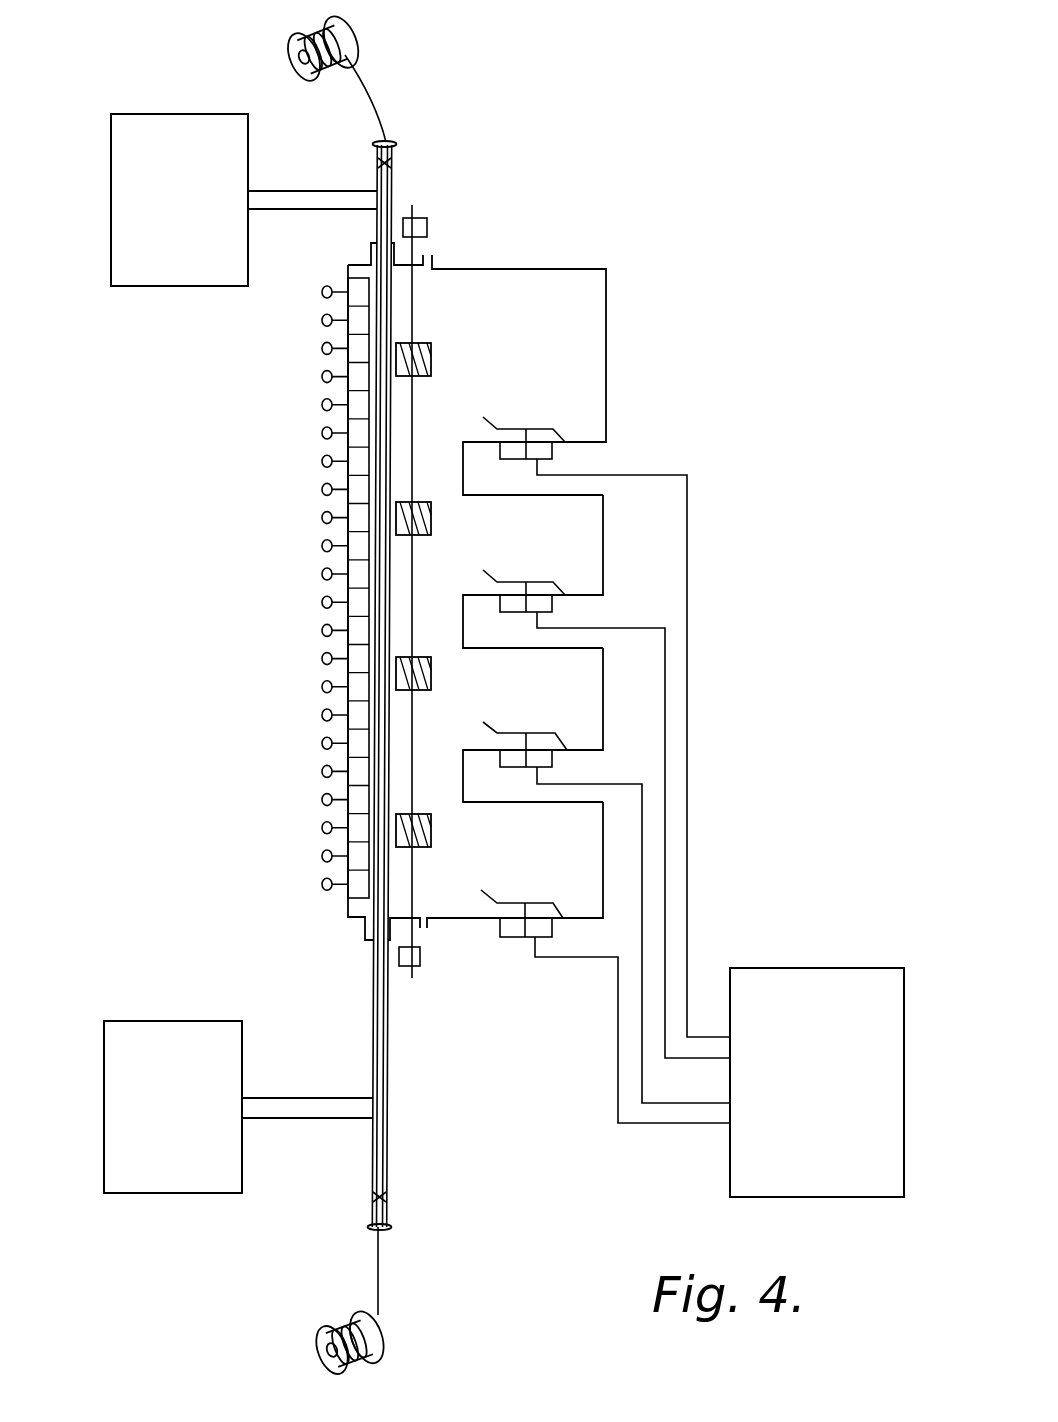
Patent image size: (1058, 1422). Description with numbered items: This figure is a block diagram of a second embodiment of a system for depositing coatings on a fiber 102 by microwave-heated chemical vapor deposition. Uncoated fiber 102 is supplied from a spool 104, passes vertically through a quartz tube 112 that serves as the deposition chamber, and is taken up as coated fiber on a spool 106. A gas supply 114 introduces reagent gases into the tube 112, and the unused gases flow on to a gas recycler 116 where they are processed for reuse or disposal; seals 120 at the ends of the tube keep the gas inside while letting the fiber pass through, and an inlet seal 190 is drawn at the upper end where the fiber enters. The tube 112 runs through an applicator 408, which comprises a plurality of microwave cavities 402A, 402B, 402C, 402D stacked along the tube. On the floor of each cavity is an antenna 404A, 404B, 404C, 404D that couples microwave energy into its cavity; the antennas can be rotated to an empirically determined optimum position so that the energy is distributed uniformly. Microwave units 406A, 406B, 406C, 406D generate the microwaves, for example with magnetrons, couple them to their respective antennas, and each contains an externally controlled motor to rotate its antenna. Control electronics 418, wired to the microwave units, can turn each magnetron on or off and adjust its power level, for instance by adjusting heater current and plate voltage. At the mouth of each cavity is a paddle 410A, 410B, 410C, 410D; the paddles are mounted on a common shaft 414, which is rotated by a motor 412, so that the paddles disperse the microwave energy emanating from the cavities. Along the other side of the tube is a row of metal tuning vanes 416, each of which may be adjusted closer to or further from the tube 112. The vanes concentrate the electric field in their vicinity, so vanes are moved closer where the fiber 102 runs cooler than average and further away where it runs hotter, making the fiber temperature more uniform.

The fiber 102 is at (370, 88).
The spool 104 is at (345, 24).
The spool 106 is at (386, 1344).
The quartz tube 112 is at (396, 143).
The gas supply 114 is at (110, 267).
The gas recycler 116 is at (185, 1021).
The seals 120 is at (386, 1197).
The inlet seal 190 is at (391, 165).
The cavity 402A is at (578, 323).
The cavity 402B is at (591, 536).
The cavity 402C is at (591, 681).
The cavity 402D is at (591, 836).
The antenna 404A is at (550, 405).
The antenna 404B is at (522, 554).
The antenna 404C is at (525, 744).
The antenna 404D is at (508, 902).
The microwave unit 406A is at (552, 450).
The microwave unit 406B is at (552, 606).
The microwave unit 406C is at (552, 760).
The microwave unit 406D is at (552, 928).
The applicator 408 is at (262, 603).
The paddle 410A is at (431, 358).
The paddle 410B is at (431, 518).
The paddle 410C is at (431, 676).
The paddle 410D is at (431, 832).
The motor 412 is at (420, 966).
The shaft 414 is at (413, 712).
The tuning vanes 416 is at (360, 294).
The control electronics 418 is at (845, 968).